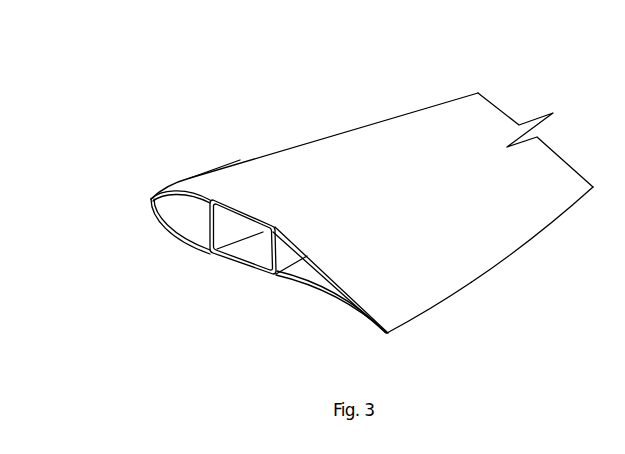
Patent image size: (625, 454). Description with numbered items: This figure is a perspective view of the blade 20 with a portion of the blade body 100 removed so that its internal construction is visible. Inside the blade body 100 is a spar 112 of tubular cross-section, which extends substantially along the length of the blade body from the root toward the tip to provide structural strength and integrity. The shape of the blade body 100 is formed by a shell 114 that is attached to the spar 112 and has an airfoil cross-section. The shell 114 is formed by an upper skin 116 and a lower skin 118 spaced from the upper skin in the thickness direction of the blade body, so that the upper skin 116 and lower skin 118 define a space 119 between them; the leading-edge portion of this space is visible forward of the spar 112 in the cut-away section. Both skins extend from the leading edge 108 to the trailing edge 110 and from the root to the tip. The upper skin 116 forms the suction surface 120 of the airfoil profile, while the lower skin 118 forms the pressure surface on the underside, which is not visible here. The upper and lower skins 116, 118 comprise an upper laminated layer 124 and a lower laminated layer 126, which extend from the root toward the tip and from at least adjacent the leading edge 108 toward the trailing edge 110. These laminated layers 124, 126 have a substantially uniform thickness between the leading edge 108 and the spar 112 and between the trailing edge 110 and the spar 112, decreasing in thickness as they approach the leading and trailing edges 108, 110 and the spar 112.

The rotor blade 20 is at (133, 30).
The blade body 100 is at (332, 112).
The leading edge 108 is at (298, 142).
The trailing edge 110 is at (457, 293).
The spar 112 is at (248, 250).
The shell 114 is at (263, 177).
The upper skin 116 is at (442, 178).
The lower skin 118 is at (487, 280).
The space 119 is at (192, 216).
The suction surface 120 is at (396, 208).
The upper laminated layer 124 is at (352, 292).
The lower laminated layer 126 is at (302, 287).